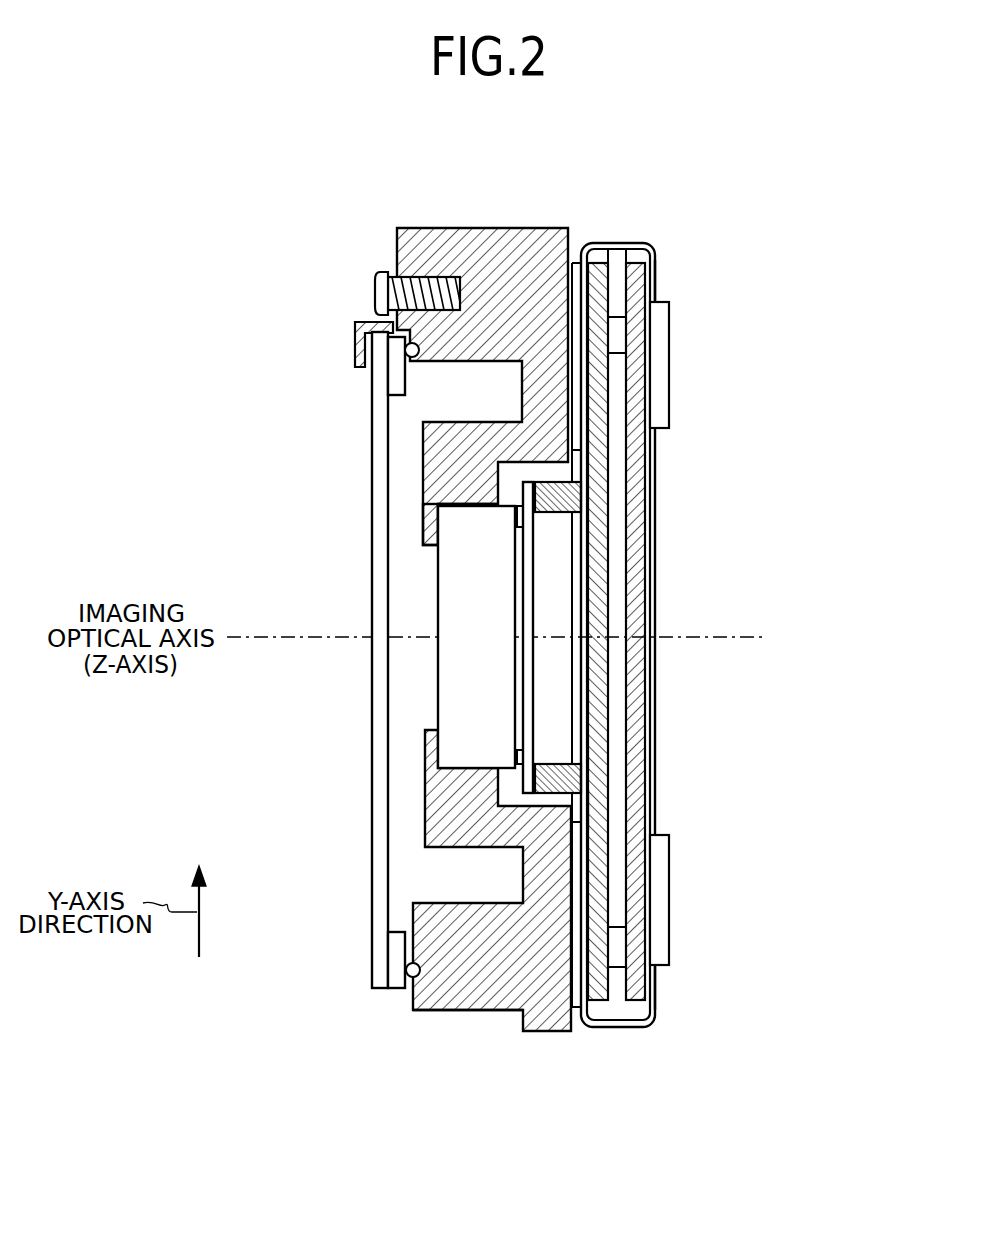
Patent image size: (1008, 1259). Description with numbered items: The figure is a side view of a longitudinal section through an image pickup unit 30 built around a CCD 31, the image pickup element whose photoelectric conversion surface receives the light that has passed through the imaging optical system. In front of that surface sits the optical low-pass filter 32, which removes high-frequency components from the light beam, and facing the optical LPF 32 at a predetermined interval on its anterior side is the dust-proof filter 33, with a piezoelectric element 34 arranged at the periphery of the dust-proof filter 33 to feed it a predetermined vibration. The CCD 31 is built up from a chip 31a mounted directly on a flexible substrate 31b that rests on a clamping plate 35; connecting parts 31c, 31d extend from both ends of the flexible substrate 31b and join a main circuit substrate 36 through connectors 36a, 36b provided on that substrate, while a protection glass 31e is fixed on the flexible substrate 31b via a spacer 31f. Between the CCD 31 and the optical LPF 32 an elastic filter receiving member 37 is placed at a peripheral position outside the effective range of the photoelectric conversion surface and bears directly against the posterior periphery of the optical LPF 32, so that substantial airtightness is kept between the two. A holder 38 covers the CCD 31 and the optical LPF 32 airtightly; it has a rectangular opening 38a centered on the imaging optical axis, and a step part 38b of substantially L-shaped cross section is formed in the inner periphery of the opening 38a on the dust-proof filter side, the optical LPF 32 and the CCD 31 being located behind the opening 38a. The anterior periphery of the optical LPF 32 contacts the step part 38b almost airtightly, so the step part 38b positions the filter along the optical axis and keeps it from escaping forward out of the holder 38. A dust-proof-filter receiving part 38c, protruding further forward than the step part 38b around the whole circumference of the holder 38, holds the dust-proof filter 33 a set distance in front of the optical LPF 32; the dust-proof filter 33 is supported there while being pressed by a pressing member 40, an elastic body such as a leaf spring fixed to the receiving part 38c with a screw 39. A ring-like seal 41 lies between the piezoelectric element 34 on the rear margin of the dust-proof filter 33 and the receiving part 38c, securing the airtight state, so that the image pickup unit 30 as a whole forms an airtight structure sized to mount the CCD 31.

The image pickup unit 30 is at (858, 350).
The CCD 31 is at (600, 720).
The chip 31a is at (577, 673).
The flexible substrate 31b is at (587, 807).
The connecting part 31c is at (661, 278).
The connecting part 31d is at (658, 991).
The protection glass 31e is at (536, 617).
The spacer 31f is at (585, 482).
The optical low-pass filter 32 is at (437, 702).
The dust-proof filter 33 is at (372, 583).
The piezoelectric element 34 is at (398, 988).
The clamping plate 35 is at (597, 243).
The main circuit substrate 36 is at (633, 263).
The connector 36a is at (670, 405).
The connector 36b is at (670, 900).
The filter receiving member 37 is at (523, 758).
The holder 38 is at (495, 1000).
The opening 38a is at (463, 505).
The step part 38b is at (438, 532).
The dust-proof-filter receiving part 38c is at (430, 1012).
The screw 39 is at (375, 287).
The pressing member 40 is at (356, 346).
The seal 41 is at (420, 351).